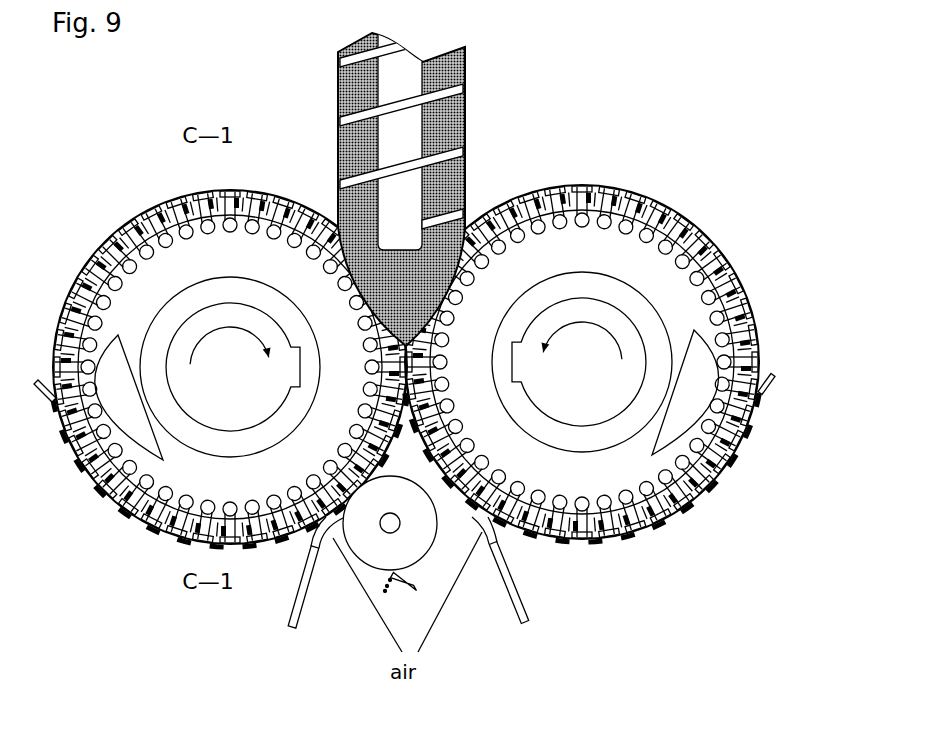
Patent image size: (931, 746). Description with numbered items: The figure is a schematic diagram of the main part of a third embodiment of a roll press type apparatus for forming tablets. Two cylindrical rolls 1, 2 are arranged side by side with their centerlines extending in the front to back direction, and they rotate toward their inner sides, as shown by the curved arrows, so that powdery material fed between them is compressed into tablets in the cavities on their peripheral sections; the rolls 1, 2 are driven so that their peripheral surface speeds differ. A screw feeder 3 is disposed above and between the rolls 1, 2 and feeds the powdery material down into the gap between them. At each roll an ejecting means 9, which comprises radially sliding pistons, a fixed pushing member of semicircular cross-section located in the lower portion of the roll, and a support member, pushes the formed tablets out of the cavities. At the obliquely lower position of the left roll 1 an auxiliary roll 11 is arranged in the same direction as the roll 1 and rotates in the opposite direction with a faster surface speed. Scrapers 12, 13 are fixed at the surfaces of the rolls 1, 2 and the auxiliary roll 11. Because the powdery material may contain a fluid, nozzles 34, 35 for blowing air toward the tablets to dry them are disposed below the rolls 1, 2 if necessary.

The roll 1 is at (98, 210).
The roll 2 is at (700, 204).
The screw feeder 3 is at (492, 108).
The ejecting means 9 is at (130, 323).
The auxiliary roll 11 is at (418, 540).
The scraper 12 is at (766, 387).
The scraper 13 is at (412, 588).
The nozzle 34 is at (293, 627).
The nozzle 35 is at (527, 622).